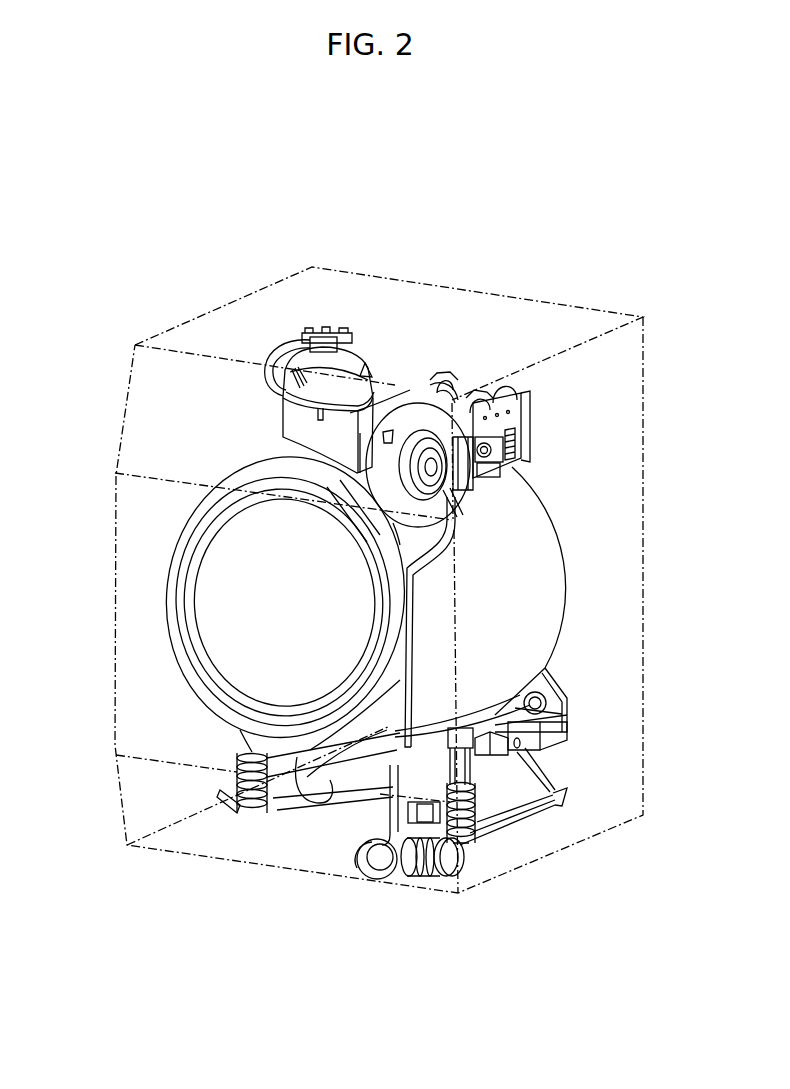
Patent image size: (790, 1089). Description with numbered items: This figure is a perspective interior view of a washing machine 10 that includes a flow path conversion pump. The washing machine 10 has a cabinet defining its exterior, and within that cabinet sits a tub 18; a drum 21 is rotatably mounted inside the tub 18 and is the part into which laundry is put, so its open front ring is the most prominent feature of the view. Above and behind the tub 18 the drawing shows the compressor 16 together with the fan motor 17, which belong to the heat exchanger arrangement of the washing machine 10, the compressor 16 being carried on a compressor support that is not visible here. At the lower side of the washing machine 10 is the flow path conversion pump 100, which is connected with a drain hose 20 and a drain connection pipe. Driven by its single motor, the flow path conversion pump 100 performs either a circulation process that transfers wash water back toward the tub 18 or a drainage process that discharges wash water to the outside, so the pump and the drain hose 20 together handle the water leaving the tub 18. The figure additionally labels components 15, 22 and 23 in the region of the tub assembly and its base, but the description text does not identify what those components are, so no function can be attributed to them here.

The washing machine 10 is at (207, 302).
The detergent/water supply reservoir 15 is at (388, 370).
The compressor 16 is at (463, 403).
The fan motor 17 is at (503, 478).
The tub 18 is at (525, 640).
The drain hose 20 is at (503, 798).
The drum 21 is at (217, 615).
The base frame with spring 22 is at (322, 800).
The tub support bracket 23 is at (413, 613).
The flow path conversion pump 100 is at (438, 877).